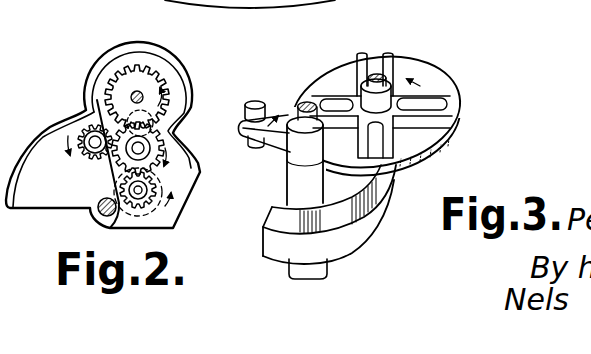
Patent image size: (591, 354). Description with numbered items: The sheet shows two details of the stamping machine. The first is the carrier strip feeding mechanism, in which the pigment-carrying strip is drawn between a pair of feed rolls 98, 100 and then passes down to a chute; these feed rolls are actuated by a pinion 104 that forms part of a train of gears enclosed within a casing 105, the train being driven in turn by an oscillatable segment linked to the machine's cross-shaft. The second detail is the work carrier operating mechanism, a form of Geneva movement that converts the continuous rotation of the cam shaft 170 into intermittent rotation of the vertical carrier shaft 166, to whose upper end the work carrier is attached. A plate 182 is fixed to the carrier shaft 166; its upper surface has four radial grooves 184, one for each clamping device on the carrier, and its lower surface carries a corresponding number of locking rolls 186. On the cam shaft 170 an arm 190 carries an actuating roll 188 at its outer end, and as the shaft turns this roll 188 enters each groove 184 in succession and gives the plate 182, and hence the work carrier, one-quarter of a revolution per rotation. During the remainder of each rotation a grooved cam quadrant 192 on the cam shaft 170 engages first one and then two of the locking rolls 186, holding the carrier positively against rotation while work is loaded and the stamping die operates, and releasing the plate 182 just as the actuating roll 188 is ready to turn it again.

In FIG. 2, the feed roll 98 is at (182, 119).
In FIG. 2, the feed roll 100 is at (162, 182).
In FIG. 2, the pinion 104 is at (115, 77).
In FIG. 2, the casing 105 is at (171, 58).
In FIG. 3, the carrier shaft 166 is at (385, 80).
In FIG. 3, the cam shaft 170 is at (304, 102).
In FIG. 3, the plate 182 is at (432, 81).
In FIG. 3, the radial grooves 184 is at (435, 103).
In FIG. 3, the locking rolls 186 is at (418, 166).
In FIG. 3, the actuating roll 188 is at (256, 148).
In FIG. 3, the arm 190 is at (276, 109).
In FIG. 3, the grooved cam quadrant 192 is at (361, 230).